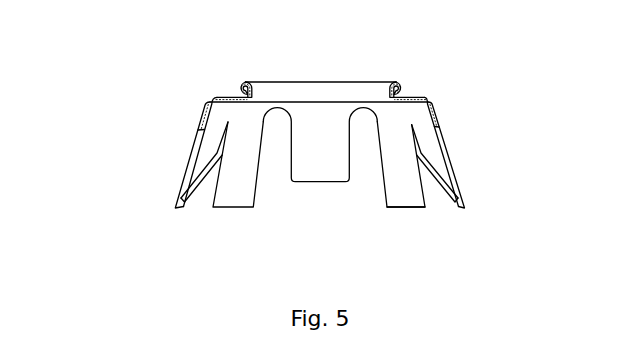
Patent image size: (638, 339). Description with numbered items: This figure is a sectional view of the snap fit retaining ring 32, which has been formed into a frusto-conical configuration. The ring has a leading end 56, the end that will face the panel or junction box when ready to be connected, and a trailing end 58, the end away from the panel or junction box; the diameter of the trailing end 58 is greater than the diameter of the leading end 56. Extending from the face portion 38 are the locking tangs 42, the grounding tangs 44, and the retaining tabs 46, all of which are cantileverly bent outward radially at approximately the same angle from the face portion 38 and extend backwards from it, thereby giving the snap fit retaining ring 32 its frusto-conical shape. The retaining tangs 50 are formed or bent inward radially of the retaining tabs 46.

The snap fit retaining ring 32 is at (126, 99).
The face portion 38 is at (322, 159).
The locking tangs 42 is at (311, 172).
The grounding tangs 44 is at (226, 196).
The retaining tabs 46 is at (178, 190).
The retaining tangs 50 is at (184, 165).
The leading end 56 is at (320, 82).
The trailing end 58 is at (405, 209).